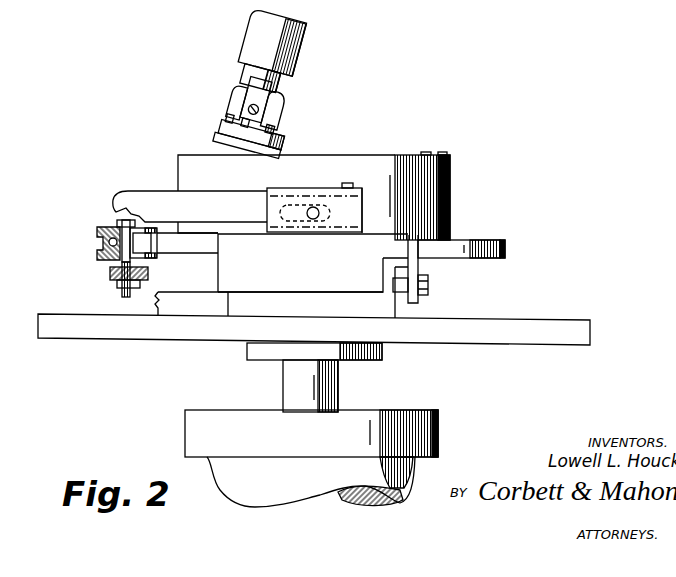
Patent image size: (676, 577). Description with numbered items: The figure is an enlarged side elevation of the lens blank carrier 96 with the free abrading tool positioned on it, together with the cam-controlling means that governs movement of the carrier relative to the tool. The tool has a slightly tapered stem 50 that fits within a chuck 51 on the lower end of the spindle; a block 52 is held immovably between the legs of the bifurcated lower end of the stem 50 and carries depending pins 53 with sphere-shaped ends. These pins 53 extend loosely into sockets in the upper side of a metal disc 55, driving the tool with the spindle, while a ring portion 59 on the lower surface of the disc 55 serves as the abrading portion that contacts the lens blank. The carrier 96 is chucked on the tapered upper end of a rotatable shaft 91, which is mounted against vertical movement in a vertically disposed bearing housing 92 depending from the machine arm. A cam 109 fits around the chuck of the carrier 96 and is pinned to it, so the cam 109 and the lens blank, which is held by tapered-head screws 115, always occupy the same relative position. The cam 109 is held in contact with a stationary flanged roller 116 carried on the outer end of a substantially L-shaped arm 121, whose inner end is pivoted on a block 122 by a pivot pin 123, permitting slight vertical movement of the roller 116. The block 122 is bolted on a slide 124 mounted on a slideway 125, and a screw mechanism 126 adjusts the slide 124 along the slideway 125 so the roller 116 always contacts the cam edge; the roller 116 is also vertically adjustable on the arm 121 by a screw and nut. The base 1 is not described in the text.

The base plate 1 is at (57, 322).
The tapered stem 50 is at (258, 75).
The chuck 51 is at (296, 47).
The block 52 is at (277, 107).
The depending pins 53 is at (275, 131).
The metal disc 55 is at (228, 128).
The ring portion 59 is at (223, 150).
The rotatable shaft 91 is at (340, 383).
The bearing housing 92 is at (373, 423).
The lens blank carrier 96 is at (370, 167).
The cam 109 is at (481, 241).
The screws 115 is at (437, 155).
The flanged roller 116 is at (104, 244).
The L-shaped arm 121 is at (180, 200).
The block 122 is at (300, 188).
The pivot pin 123 is at (317, 203).
The slide 124 is at (247, 272).
The slideway 125 is at (268, 302).
The screw mechanism 126 is at (428, 283).